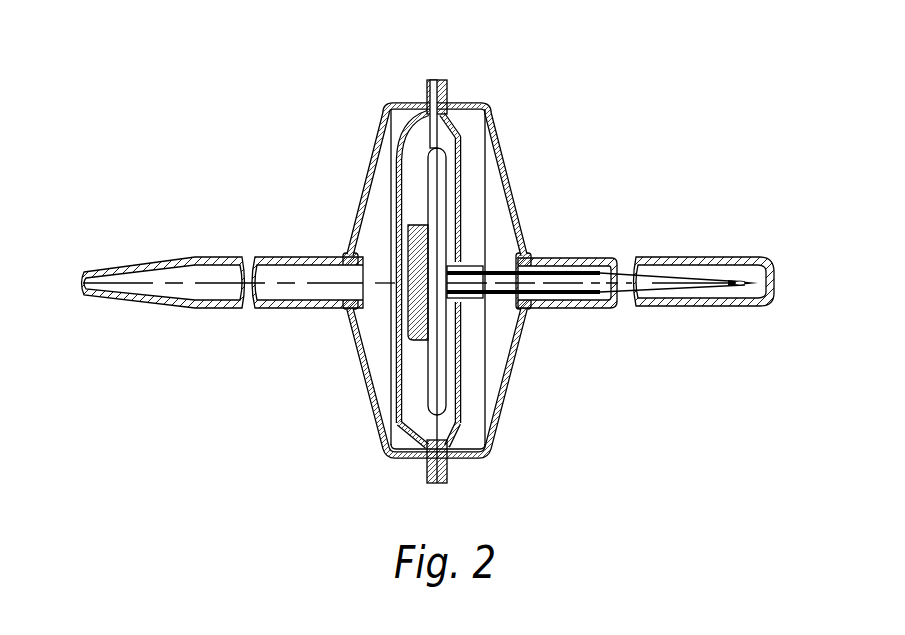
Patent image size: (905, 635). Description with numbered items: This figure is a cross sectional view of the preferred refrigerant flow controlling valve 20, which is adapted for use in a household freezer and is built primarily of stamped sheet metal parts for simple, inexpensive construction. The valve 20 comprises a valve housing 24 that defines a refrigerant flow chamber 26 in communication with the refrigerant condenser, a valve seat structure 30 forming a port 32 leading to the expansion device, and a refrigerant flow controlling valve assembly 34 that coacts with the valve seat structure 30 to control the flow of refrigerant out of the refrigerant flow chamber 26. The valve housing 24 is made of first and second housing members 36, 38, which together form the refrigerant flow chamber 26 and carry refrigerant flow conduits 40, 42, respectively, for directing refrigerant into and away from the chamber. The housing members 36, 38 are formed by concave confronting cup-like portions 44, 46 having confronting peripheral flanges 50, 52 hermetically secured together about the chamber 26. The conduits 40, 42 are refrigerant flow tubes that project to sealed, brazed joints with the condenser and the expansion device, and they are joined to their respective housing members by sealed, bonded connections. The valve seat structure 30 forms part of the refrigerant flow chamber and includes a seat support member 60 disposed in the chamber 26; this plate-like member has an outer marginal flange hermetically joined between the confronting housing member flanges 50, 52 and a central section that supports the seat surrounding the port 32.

The valve 20 is at (428, 259).
The valve housing 24 is at (505, 397).
The refrigerant flow chamber 26 is at (490, 348).
The valve seat structure 30 is at (402, 428).
The port 32 is at (398, 282).
The refrigerant flow controlling valve assembly 34 is at (420, 165).
The first housing member 36 is at (516, 188).
The second housing member 38 is at (350, 340).
The refrigerant flow conduit 40 is at (653, 250).
The refrigerant flow conduit 42 is at (160, 304).
The concave cup-like portion 44 is at (498, 431).
The concave cup-like portion 46 is at (368, 185).
The peripheral flange 50 is at (448, 87).
The peripheral flange 52 is at (426, 84).
The seat support member 60 is at (397, 388).